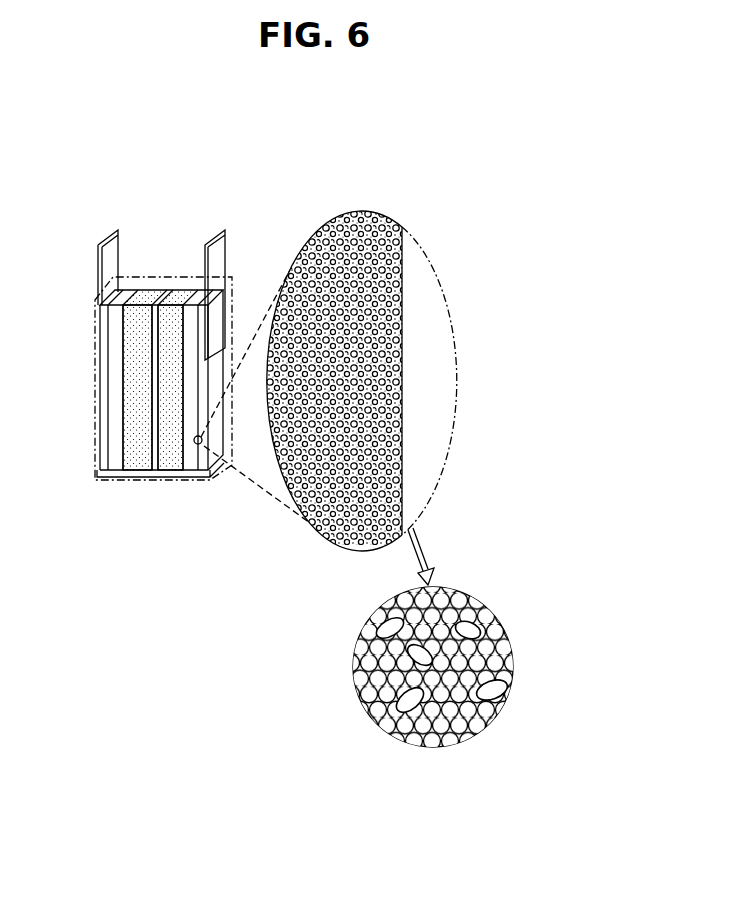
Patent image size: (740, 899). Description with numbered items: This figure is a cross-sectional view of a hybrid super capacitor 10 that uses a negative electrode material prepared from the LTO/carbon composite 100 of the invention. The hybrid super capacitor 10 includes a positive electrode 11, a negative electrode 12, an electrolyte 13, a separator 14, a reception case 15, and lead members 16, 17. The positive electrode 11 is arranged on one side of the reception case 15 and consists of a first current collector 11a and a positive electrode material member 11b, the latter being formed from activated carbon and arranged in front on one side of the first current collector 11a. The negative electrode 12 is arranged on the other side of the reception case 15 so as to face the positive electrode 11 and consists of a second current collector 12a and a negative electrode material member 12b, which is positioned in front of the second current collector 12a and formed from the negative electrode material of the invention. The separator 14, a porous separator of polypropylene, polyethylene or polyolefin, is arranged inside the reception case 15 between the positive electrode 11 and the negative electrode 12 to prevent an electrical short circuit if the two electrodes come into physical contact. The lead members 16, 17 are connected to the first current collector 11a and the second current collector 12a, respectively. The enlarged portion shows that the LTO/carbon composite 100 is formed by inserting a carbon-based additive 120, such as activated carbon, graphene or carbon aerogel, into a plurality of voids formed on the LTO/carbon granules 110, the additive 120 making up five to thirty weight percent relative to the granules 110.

The hybrid super capacitor 10 is at (186, 175).
The positive electrode 11 is at (43, 498).
The first current collector 11a is at (96, 470).
The positive electrode material member 11b is at (117, 468).
The negative electrode 12 is at (289, 546).
The second current collector 12a is at (190, 465).
The negative electrode material member 12b is at (207, 468).
The electrolyte 13 is at (135, 468).
The separator 14 is at (167, 292).
The reception case 15 is at (148, 276).
The lead member 16 is at (116, 231).
The lead member 17 is at (216, 231).
The LTO/carbon composite 100 is at (403, 230).
The LTO/carbon granules 110 is at (340, 657).
The carbon-based additive 120 is at (383, 612).